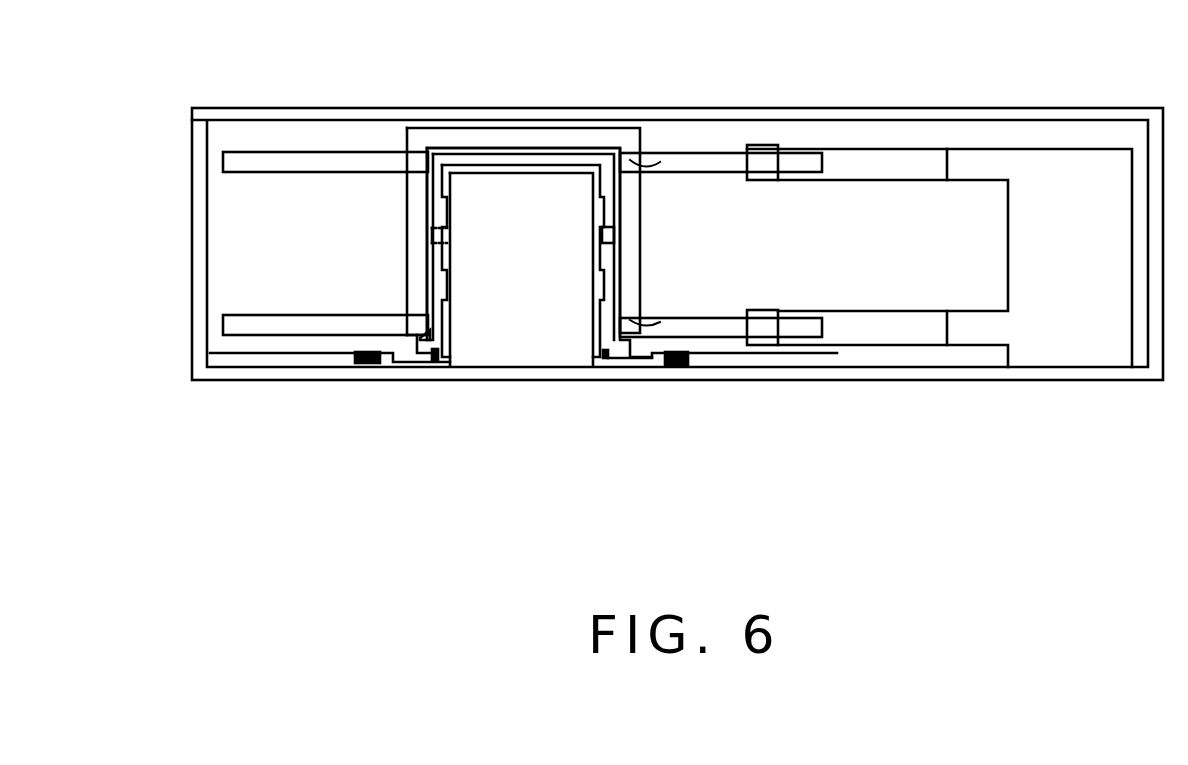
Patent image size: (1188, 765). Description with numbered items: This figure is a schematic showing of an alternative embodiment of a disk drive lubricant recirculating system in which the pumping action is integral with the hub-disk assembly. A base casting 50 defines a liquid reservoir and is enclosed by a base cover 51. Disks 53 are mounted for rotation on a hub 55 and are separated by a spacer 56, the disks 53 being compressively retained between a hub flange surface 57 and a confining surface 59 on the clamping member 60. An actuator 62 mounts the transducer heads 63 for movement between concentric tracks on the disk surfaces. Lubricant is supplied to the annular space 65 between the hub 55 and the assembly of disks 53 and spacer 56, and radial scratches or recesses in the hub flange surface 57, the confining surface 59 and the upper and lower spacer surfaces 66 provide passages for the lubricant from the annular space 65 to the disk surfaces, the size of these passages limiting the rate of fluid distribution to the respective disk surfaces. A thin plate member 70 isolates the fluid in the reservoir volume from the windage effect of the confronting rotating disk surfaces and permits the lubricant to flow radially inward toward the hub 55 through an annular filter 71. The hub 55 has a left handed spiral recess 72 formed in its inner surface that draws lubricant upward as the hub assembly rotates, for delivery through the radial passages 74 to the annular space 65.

The base casting 50 is at (979, 382).
The base cover 51 is at (982, 108).
The disks 53 is at (248, 173).
The hub 55 is at (468, 148).
The spacer 56 is at (407, 240).
The hub flange surface 57 is at (421, 333).
The confining surface 59 is at (636, 155).
The clamping member 60 is at (572, 128).
The actuator 62 is at (1086, 148).
The transducer heads 63 is at (763, 310).
The annular space 65 is at (430, 165).
The upper and lower spacer surfaces 66 is at (640, 168).
The thin plate member 70 is at (268, 354).
The annular filter 71 is at (357, 354).
The left handed spiral recess 72 is at (450, 260).
The radial passages 74 is at (606, 248).